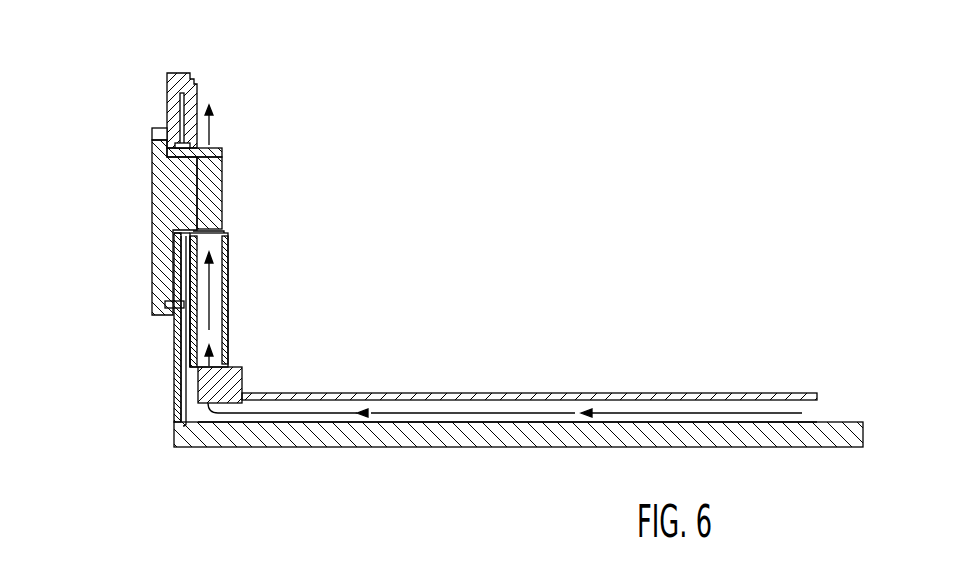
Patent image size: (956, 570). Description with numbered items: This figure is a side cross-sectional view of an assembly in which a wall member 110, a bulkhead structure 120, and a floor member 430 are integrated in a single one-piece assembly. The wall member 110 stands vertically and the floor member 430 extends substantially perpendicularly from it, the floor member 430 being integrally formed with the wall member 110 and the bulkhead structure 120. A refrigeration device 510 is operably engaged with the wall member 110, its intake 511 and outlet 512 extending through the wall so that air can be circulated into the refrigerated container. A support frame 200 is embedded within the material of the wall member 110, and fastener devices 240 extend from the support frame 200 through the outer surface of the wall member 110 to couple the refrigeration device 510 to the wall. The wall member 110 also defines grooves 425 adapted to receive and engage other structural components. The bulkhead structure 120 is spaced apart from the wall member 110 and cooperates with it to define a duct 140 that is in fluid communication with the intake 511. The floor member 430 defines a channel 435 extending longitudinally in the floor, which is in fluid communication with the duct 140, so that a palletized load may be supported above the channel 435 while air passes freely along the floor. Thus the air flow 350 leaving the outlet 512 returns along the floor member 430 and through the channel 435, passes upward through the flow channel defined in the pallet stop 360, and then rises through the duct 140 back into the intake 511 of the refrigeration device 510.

The wall member 110 is at (180, 340).
The bulkhead structure 120 is at (227, 312).
The duct 140 is at (200, 275).
The support frame 200 is at (172, 120).
The fastener devices 240 is at (162, 133).
The air flow 350 is at (211, 125).
The pallet stop 360 is at (243, 368).
The grooves 425 is at (200, 80).
The floor member 430 is at (430, 447).
The channel 435 is at (503, 418).
The refrigeration device 510 is at (165, 180).
The intake 511 is at (222, 215).
The outlet 512 is at (217, 148).